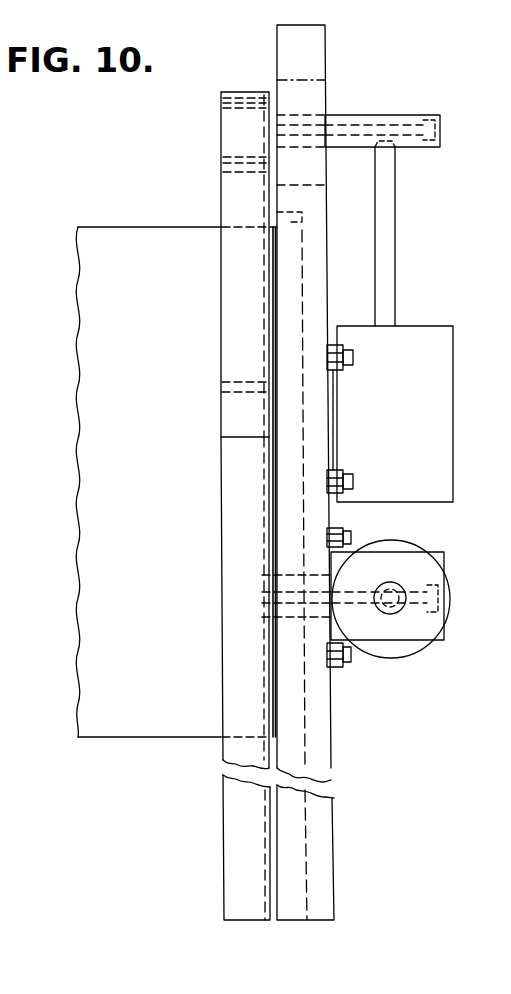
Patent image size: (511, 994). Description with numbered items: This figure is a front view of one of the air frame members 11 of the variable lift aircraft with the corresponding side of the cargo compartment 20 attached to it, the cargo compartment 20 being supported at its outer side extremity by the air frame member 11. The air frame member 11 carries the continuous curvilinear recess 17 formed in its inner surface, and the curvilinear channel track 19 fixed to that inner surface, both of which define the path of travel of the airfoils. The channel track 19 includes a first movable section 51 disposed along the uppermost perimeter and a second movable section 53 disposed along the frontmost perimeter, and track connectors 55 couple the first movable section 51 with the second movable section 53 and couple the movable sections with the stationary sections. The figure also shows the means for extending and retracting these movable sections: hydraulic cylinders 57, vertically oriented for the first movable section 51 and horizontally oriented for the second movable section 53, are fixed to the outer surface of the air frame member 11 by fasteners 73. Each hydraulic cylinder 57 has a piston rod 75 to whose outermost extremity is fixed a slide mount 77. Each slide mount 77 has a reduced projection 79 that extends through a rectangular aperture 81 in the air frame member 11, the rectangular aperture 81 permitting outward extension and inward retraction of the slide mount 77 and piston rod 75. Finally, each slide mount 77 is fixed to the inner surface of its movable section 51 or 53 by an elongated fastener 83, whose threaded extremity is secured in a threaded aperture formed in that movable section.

The air frame member 11 is at (327, 57).
The continuous curvilinear recess 17 is at (290, 255).
The curvilinear channel track 19 is at (216, 679).
The cargo compartment 20 is at (132, 404).
The first movable section 51 is at (220, 121).
The second movable section 53 is at (221, 560).
The track connector 55 is at (220, 242).
The hydraulic cylinder 57 is at (425, 433).
The fastener 73 is at (357, 354).
The piston rod 75 is at (395, 203).
The slide mount 77 is at (382, 113).
The reduced projection 79 is at (296, 147).
The rectangular aperture 81 is at (285, 98).
The elongated fastener 83 is at (440, 132).